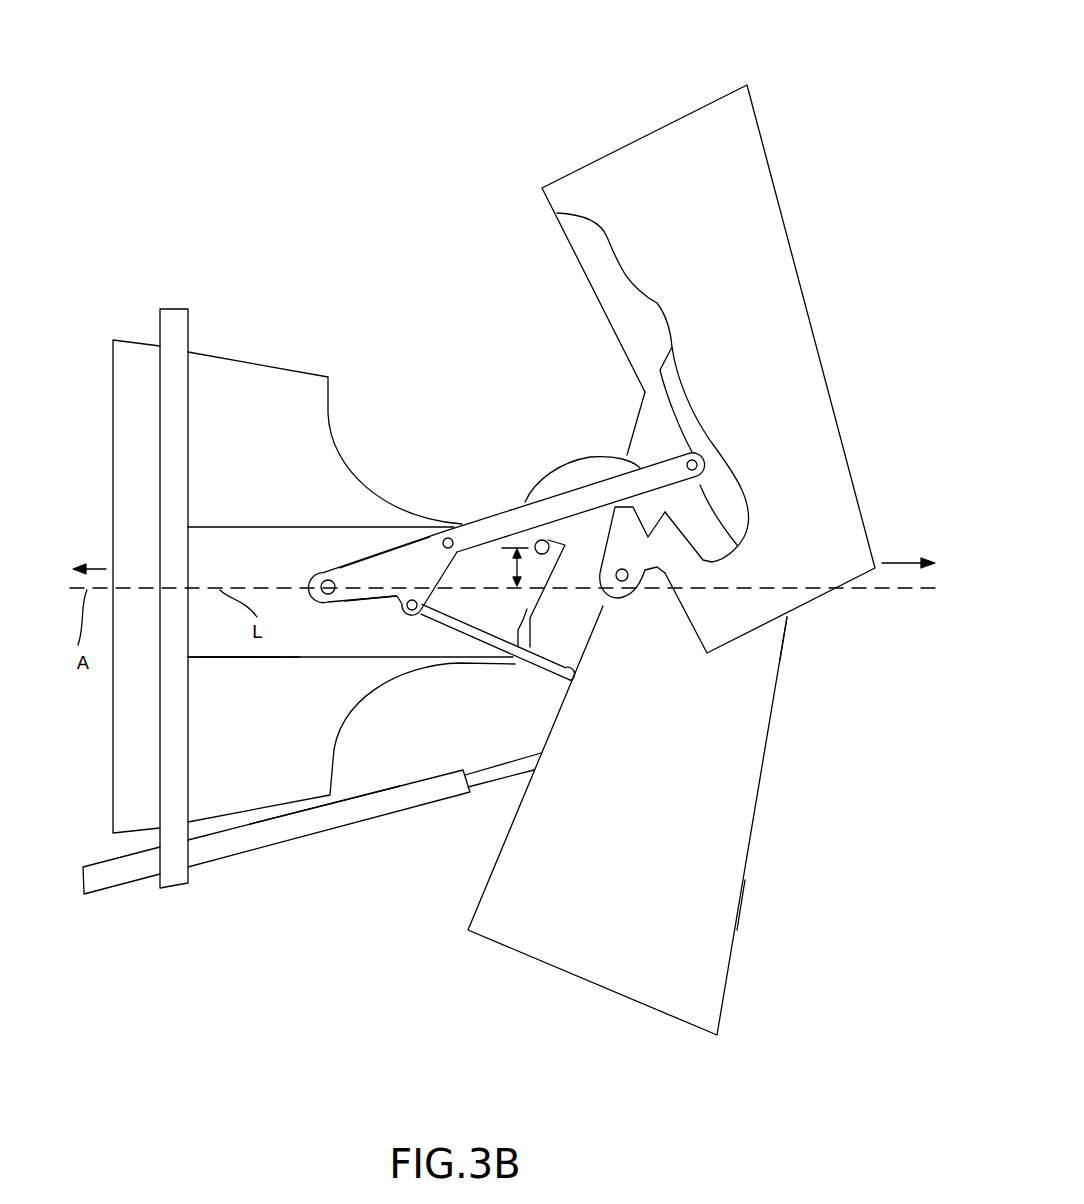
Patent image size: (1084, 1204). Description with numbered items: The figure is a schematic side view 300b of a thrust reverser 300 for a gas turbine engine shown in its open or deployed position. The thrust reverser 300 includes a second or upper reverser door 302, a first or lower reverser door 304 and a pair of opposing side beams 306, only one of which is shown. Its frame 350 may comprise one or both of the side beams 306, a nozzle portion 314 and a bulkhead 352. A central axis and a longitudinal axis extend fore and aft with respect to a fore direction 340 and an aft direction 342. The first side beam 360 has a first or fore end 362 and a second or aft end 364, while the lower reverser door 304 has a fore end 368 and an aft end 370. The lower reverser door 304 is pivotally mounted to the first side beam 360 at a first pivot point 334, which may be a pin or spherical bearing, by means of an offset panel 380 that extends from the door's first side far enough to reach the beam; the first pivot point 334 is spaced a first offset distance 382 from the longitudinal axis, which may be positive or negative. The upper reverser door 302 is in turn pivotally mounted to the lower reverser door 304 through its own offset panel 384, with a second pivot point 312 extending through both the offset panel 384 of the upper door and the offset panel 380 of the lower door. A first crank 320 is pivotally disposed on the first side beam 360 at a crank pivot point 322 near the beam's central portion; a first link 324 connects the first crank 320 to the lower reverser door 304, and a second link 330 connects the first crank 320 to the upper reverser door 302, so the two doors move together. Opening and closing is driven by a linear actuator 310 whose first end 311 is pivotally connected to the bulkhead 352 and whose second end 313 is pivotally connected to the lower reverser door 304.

The thrust reverser 300 is at (150, 112).
The schematic side view 300b is at (222, 120).
The second or upper reverser door 302 is at (773, 155).
The first or lower reverser door 304 is at (730, 973).
The pair of opposing side beams 306 is at (237, 643).
The linear actuator 310 is at (110, 878).
The first end 311 is at (318, 820).
The second pivot point 312 is at (624, 582).
The second end 313 is at (502, 768).
The nozzle portion 314 is at (288, 368).
The first crank 320 is at (378, 577).
The crank pivot point 322 is at (327, 580).
The first link 324 is at (482, 645).
The second link 330 is at (555, 508).
The first pivot point 334 is at (710, 562).
The fore direction 340 is at (92, 566).
The aft direction 342 is at (893, 563).
The frame 350 is at (288, 640).
The bulkhead 352 is at (180, 880).
The first side beam 360 is at (213, 643).
The first or fore end 362 is at (218, 543).
The second or aft end 364 is at (485, 553).
The fore end 368 is at (717, 932).
The aft end 370 is at (773, 640).
The offset panel 380 is at (590, 460).
The first offset distance 382 is at (523, 577).
The offset panel 384 is at (617, 583).